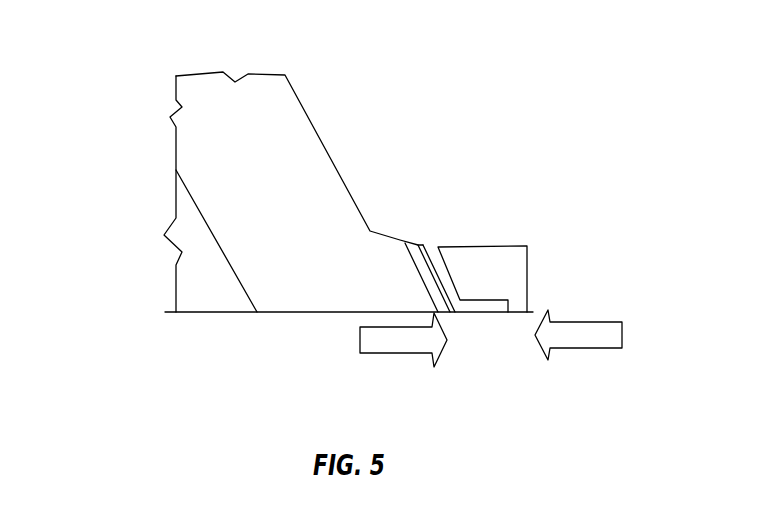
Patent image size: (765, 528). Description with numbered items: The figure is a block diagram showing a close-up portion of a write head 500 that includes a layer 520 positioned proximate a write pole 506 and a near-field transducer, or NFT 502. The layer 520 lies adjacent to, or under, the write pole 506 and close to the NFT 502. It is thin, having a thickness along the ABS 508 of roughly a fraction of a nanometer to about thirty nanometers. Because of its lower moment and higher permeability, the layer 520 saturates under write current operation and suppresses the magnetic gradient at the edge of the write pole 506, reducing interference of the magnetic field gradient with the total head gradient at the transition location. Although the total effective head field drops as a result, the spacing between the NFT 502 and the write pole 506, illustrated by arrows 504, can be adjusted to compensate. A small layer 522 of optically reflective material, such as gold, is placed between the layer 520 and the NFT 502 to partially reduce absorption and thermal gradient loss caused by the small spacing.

The write head 500 is at (362, 210).
The NFT 502 is at (520, 243).
The arrows 504 is at (395, 353).
The write pole 506 is at (288, 150).
The ABS 508 is at (208, 313).
The layer 520 is at (407, 237).
The small layer of optically reflective material 522 is at (428, 255).